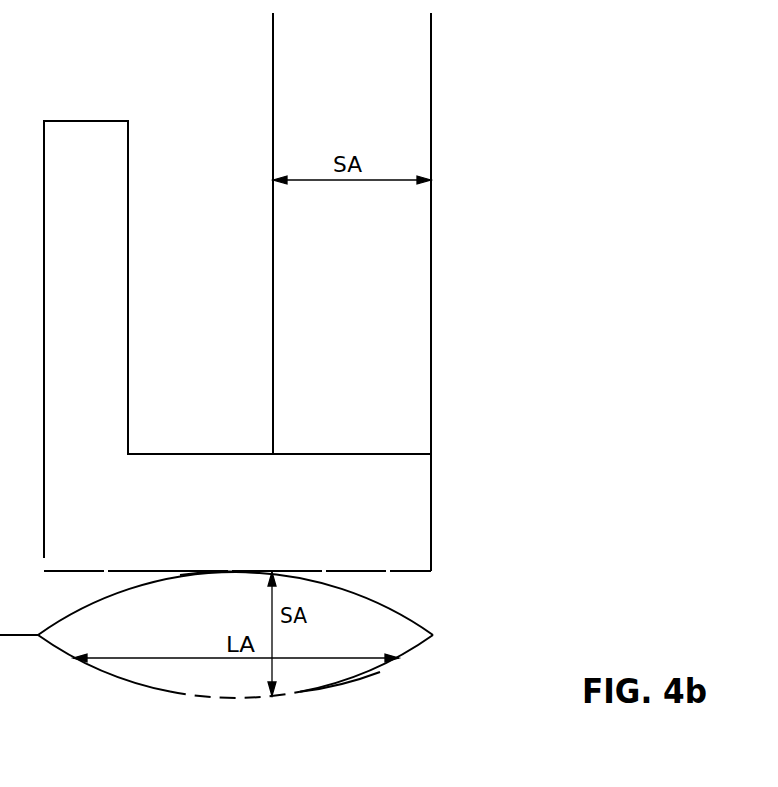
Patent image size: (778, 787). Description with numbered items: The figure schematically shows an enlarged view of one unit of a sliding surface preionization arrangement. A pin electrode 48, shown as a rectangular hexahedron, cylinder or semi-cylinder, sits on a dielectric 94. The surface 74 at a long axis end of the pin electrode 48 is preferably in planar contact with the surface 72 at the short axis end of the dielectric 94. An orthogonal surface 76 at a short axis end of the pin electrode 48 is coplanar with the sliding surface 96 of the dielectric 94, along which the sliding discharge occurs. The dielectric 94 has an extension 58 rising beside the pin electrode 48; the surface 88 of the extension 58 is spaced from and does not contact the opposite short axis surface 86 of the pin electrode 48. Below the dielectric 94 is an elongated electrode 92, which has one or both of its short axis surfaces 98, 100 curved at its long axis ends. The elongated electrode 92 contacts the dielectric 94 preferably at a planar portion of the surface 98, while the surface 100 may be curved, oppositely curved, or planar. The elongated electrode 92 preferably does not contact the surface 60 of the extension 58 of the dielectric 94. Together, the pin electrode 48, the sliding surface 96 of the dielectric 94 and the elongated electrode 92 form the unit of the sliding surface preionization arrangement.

The pin electrode 48 is at (359, 286).
The extension 58 is at (92, 376).
The surface of the extension 60 is at (44, 427).
The surface at the short axis end of the dielectric 72 is at (355, 454).
The surface at a long axis end of the electrode 74 is at (313, 454).
The short axis surface of the electrode 76 is at (431, 336).
The surface of the electrode 86 is at (273, 367).
The surface of the extension 88 is at (128, 274).
The elongated electrode 92 is at (173, 617).
The dielectric 94 is at (232, 521).
The sliding surface 96 is at (431, 492).
The short axis surface 98 is at (205, 572).
The short axis surface 100 is at (337, 685).